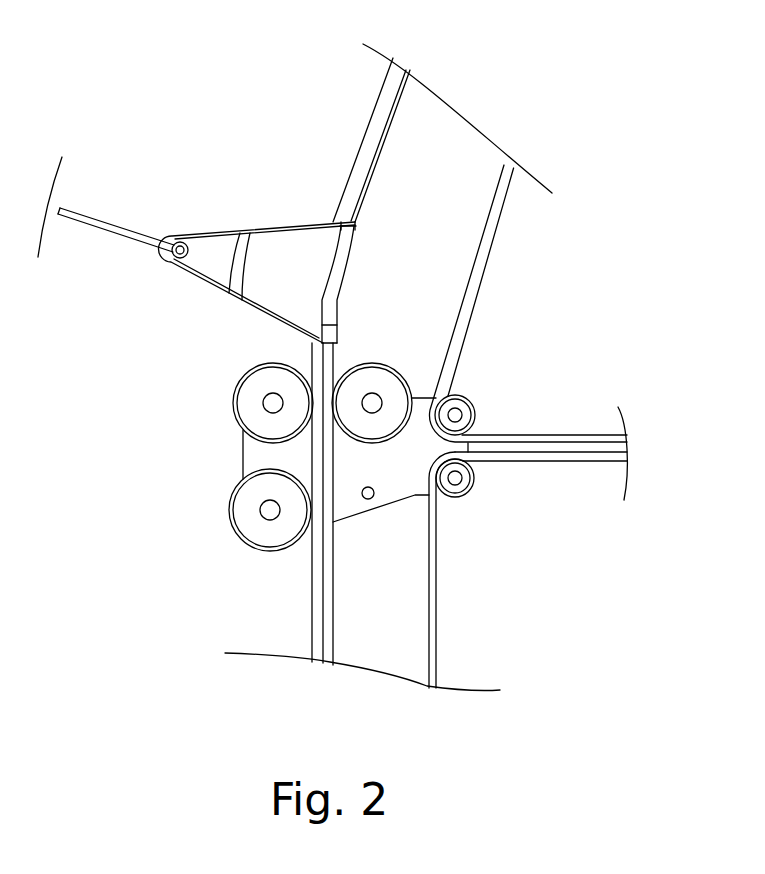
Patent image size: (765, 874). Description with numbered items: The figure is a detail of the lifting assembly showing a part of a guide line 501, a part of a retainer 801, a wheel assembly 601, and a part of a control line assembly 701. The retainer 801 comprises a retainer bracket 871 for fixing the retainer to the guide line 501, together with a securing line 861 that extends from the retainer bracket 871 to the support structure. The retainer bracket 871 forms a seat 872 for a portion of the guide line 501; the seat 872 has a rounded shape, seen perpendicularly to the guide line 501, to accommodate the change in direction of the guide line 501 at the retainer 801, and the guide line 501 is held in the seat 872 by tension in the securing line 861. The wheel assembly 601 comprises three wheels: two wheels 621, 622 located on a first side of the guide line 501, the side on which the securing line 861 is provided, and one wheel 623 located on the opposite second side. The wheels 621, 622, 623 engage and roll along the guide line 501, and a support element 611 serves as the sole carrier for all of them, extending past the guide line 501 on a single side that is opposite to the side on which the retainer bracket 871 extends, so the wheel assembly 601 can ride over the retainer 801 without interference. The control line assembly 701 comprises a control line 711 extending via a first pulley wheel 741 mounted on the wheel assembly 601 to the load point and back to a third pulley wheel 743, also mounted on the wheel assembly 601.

The guide line 501 is at (357, 158).
The wheel assembly 601 is at (210, 580).
The support element 611 is at (343, 519).
The wheel 621 is at (229, 508).
The wheel 622 is at (233, 402).
The wheel 623 is at (375, 362).
The control line assembly 701 is at (553, 463).
The control line 711 is at (495, 232).
The first pulley wheel 741 is at (452, 498).
The third pulley wheel 743 is at (467, 400).
The retainer 801 is at (152, 271).
The securing line 861 is at (108, 222).
The retainer bracket 871 is at (258, 229).
The seat 872 is at (358, 225).